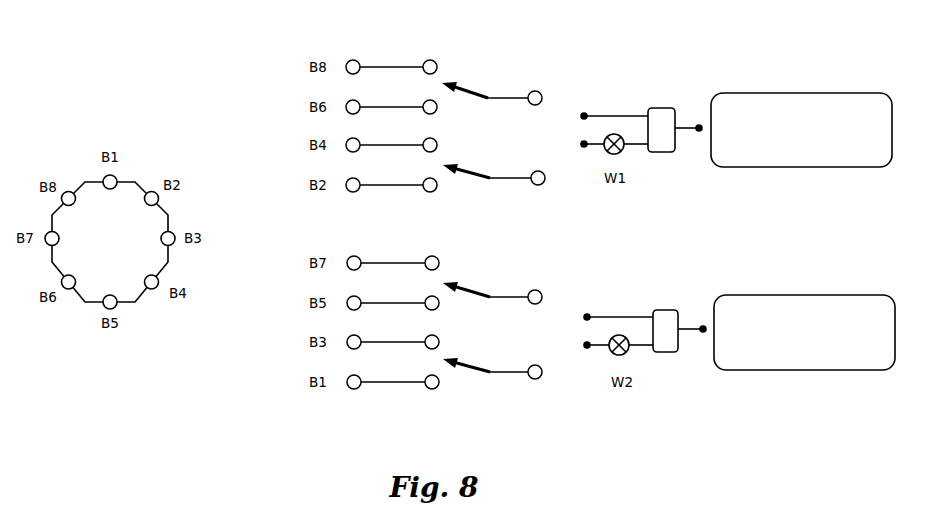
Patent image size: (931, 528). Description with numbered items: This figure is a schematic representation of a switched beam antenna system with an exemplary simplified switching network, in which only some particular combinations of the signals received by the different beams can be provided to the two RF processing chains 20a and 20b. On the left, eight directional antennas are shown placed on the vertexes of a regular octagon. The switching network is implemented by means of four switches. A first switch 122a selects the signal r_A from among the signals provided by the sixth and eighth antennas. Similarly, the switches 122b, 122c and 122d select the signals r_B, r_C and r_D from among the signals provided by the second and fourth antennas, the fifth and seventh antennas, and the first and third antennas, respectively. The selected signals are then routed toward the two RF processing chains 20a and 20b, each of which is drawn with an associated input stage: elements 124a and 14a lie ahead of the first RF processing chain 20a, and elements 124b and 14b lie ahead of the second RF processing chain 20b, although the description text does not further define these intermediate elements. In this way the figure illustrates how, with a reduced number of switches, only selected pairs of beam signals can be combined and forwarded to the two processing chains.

The first switch 122a is at (470, 89).
The switch 122b is at (472, 169).
The switch 122c is at (470, 288).
The switch 122d is at (472, 364).
The lamp / indicator W1 124a is at (613, 134).
The lamp / indicator W2 124b is at (618, 335).
The sensor module a 14a is at (660, 108).
The sensor module b 14b is at (665, 310).
The RF processing chain 20a is at (783, 93).
The RF processing chain 20b is at (783, 295).